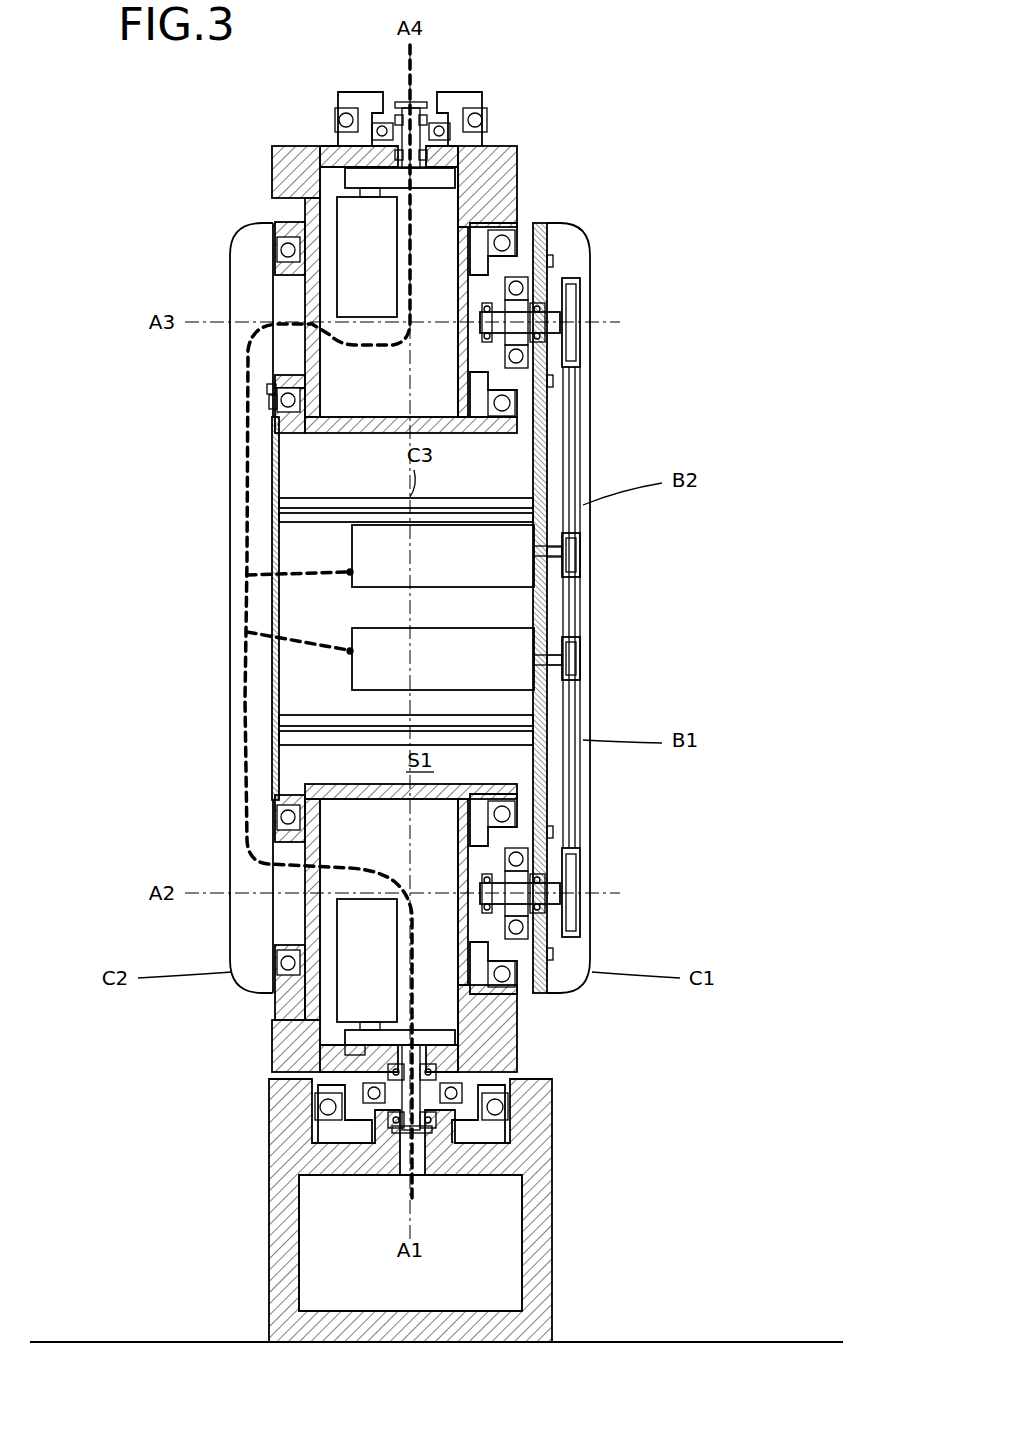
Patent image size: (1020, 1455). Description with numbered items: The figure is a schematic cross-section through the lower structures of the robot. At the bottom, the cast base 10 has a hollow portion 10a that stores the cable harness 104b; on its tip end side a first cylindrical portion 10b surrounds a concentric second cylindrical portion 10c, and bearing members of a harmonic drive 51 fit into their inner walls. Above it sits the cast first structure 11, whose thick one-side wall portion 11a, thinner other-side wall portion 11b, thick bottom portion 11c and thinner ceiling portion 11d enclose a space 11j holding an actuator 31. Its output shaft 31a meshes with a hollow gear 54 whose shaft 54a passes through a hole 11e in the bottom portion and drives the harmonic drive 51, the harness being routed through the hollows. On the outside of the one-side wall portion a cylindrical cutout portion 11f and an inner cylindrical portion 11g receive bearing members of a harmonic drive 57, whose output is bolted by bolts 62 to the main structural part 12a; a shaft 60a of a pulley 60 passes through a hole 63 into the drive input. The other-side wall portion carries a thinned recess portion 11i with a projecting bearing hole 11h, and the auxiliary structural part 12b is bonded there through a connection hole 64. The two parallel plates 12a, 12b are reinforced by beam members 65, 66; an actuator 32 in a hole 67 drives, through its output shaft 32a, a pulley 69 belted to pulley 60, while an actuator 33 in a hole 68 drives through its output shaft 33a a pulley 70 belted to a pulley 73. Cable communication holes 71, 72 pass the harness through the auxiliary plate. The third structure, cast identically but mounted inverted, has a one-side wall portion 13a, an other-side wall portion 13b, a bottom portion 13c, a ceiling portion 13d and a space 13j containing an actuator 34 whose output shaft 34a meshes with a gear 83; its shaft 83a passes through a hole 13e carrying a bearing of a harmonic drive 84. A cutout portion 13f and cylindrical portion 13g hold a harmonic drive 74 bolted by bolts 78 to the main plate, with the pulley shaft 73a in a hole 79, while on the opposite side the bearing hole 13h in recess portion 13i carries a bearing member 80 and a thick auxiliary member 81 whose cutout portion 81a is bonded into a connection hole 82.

The base 10 is at (424, 1187).
The hollow portion 10a is at (490, 1268).
The first cylindrical portion 10b is at (507, 1085).
The second cylindrical portion 10c is at (442, 1126).
The first structure 11 is at (401, 941).
The one-side wall portion 11a is at (515, 1005).
The other-side wall portion 11b is at (278, 1062).
The bottom portion 11c is at (327, 1035).
The ceiling portion 11d is at (405, 788).
The hole 11e is at (455, 1048).
The cutout portion 11f is at (548, 808).
The cylindrical portion 11g is at (470, 846).
The bearing hole 11h is at (276, 945).
The recess portion 11i is at (290, 1005).
The space 11j is at (352, 843).
The main structural part 12a is at (548, 590).
The auxiliary structural part 12b is at (272, 702).
The one-side wall portion 13a is at (508, 170).
The other-side wall portion 13b is at (285, 178).
The bottom portion 13c is at (300, 182).
The ceiling portion 13d is at (360, 436).
The hole 13e is at (398, 100).
The cutout portion 13f is at (522, 412).
The cylindrical portion 13g is at (455, 378).
The bearing hole 13h is at (282, 372).
The recess portion 13i is at (275, 222).
The space 13j is at (330, 394).
The actuator 31 is at (350, 915).
The output shaft 31a is at (355, 1042).
The actuator 32 is at (420, 628).
The output shaft 32a is at (540, 662).
The actuator 33 is at (358, 585).
The output shaft 33a is at (537, 560).
The actuator 34 is at (345, 300).
The output shaft 34a is at (372, 165).
The harmonic drive 51 is at (478, 1100).
The gear 54 is at (415, 1032).
The shaft 54a is at (472, 1068).
The harmonic drive 57 is at (548, 826).
The pulley 60 is at (582, 862).
The shaft 60a is at (584, 904).
The bolts 62 is at (550, 960).
The hole 63 is at (605, 886).
The connection hole 64 is at (272, 823).
The beam member 65 is at (298, 725).
The beam member 66 is at (300, 515).
The hole 67 is at (552, 630).
The hole 68 is at (557, 530).
The pulley 69 is at (582, 660).
The pulley 70 is at (582, 560).
The cable communication hole 71 is at (262, 630).
The cable communication hole 72 is at (262, 575).
The pulley 73 is at (592, 352).
The shaft 73a is at (580, 304).
The harmonic drive 74 is at (522, 253).
The bolts 78 is at (550, 266).
The hole 79 is at (558, 296).
The bearing member 80 is at (267, 392).
The thick auxiliary member 81 is at (275, 427).
The cutout portion 81a is at (269, 410).
The connection hole 82 is at (275, 250).
The gear 83 is at (445, 178).
The shaft 83a is at (462, 138).
The harmonic drive 84 is at (470, 95).
The cable harness 104b is at (268, 806).